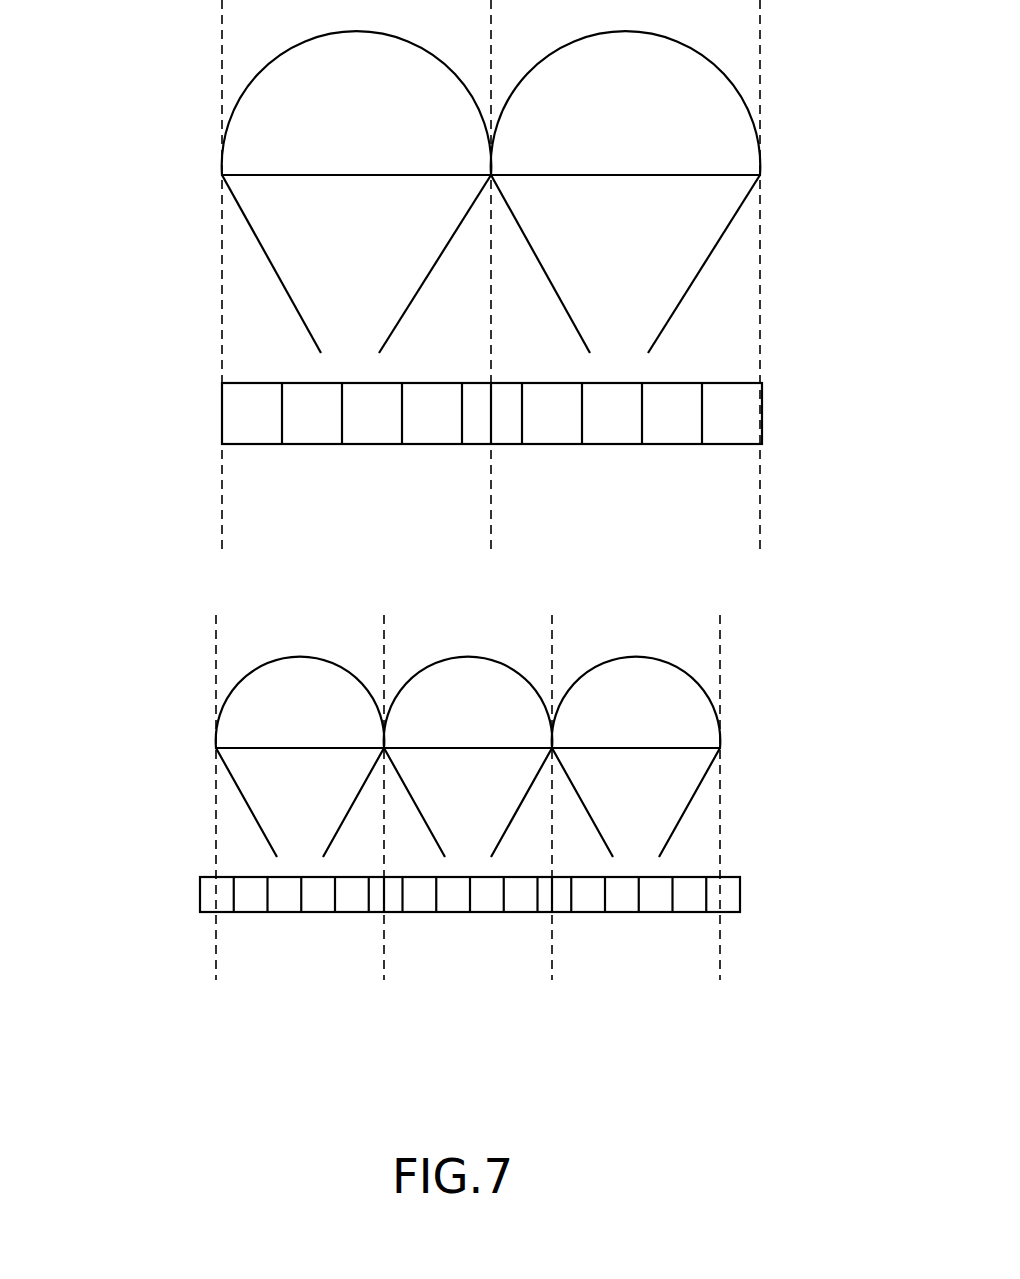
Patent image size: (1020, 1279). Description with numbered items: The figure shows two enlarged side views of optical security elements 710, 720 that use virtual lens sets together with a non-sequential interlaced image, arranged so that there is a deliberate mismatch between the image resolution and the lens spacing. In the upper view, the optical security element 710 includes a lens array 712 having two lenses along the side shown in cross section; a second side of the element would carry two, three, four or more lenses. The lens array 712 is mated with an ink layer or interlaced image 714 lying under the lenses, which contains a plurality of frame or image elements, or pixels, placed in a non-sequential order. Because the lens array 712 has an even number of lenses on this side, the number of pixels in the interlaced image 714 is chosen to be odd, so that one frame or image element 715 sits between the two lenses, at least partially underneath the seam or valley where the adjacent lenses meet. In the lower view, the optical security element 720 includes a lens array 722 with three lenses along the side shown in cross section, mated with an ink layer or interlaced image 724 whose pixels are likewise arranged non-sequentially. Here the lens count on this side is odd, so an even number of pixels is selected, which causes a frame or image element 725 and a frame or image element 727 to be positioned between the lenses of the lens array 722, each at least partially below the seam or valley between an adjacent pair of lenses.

The optical security element 710 is at (469, 277).
The lens array 712 is at (161, 65).
The ink layer or interlaced image 714 is at (160, 417).
The frame or image element (pixel) 715 is at (480, 458).
The optical security element 720 is at (448, 826).
The lens array 722 is at (161, 657).
The ink layer or interlaced image 724 is at (148, 952).
The frame or image element (pixel) 725 is at (374, 928).
The frame or image element (pixel) 727 is at (542, 928).